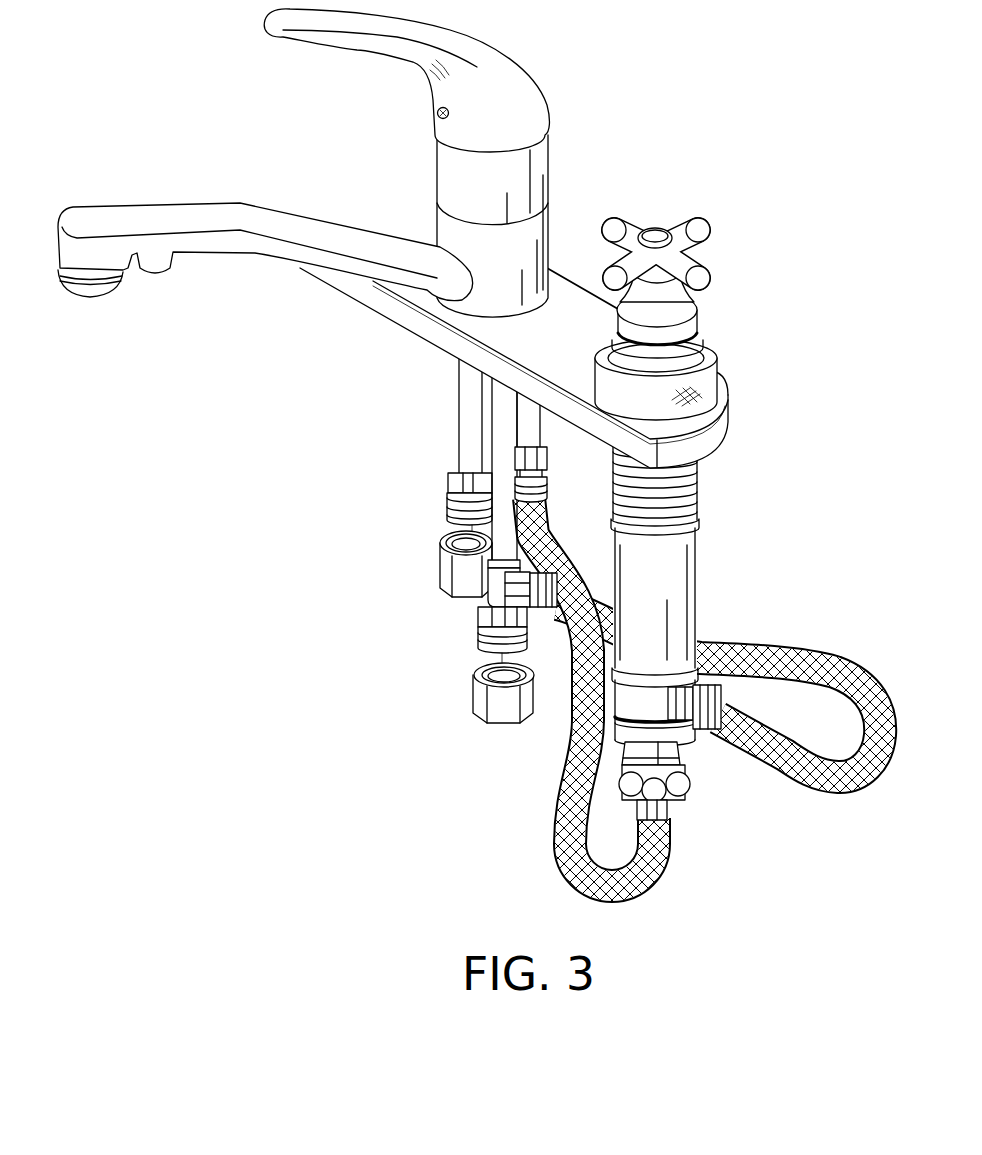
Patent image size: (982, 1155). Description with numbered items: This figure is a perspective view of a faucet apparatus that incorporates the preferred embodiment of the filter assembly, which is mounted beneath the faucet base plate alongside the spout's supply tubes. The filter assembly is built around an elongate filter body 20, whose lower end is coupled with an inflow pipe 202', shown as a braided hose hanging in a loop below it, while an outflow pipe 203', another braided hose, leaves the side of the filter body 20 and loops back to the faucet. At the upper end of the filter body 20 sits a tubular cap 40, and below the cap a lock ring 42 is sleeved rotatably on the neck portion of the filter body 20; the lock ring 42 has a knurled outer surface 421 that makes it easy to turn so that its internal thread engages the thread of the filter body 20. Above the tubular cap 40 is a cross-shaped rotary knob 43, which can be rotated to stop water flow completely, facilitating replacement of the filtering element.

The filter body 20 is at (705, 566).
The tubular cap 40 is at (703, 313).
The lock ring 42 is at (711, 347).
The knurled outer surface 421 is at (706, 390).
The rotary knob 43 is at (703, 229).
The inflow pipe 202' is at (647, 696).
The outflow pipe 203' is at (718, 669).